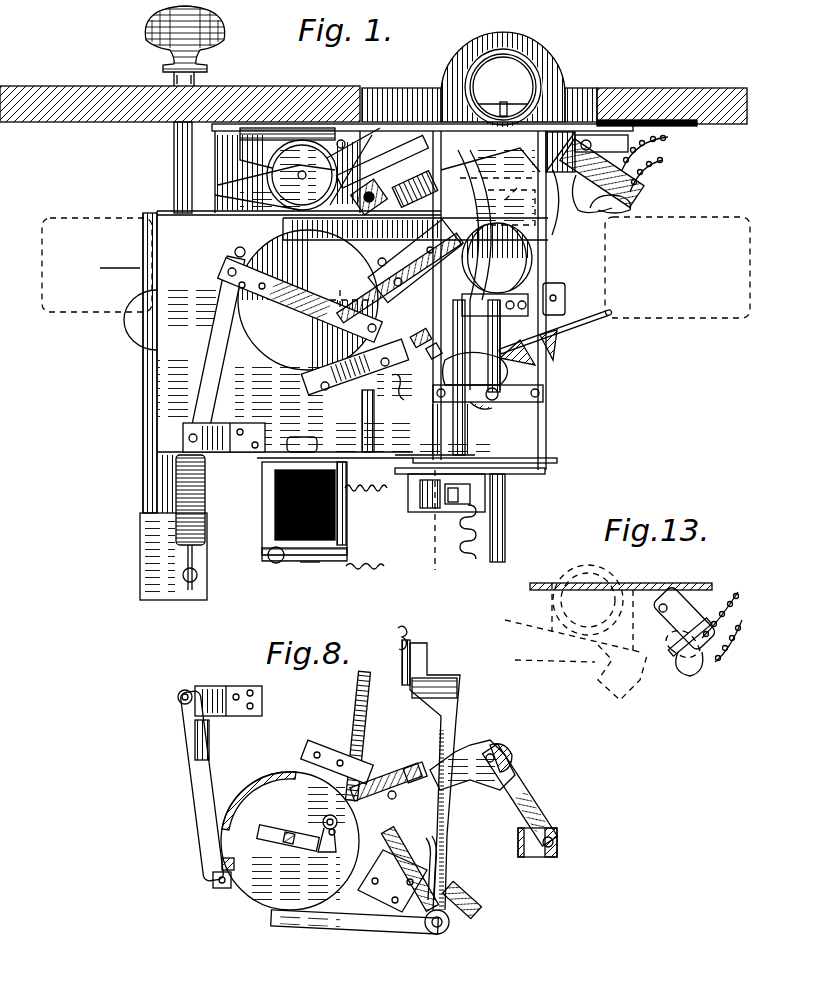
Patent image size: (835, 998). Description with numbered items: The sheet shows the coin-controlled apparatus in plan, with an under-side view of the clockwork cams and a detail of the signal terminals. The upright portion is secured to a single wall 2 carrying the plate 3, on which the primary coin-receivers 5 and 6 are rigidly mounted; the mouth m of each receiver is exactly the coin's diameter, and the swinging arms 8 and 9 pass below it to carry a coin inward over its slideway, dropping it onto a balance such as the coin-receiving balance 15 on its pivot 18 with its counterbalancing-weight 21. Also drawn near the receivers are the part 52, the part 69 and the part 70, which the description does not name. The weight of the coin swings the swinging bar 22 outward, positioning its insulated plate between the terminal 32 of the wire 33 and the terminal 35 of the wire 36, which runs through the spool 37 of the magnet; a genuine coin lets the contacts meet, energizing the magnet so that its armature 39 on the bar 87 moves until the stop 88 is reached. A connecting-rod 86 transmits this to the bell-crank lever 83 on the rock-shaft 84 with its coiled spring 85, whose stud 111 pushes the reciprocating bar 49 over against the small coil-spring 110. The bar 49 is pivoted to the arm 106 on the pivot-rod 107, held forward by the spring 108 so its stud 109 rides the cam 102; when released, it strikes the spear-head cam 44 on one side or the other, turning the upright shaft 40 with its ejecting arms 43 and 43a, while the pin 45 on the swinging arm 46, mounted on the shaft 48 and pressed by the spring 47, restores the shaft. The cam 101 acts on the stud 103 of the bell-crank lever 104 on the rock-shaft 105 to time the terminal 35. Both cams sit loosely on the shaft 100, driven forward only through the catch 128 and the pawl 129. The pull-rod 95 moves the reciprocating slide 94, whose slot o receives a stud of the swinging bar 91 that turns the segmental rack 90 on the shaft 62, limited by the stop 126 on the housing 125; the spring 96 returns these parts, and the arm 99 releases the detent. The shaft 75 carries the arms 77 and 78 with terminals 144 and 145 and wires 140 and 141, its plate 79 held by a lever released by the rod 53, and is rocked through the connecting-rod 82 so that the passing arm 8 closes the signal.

In FIG. 1, the wall 2 is at (72, 92).
In FIG. 1, the plate 3 is at (388, 124).
In FIG. 13, the plate 3 is at (662, 583).
In FIG. 1, the primary coin-receiver 5 is at (519, 27).
In FIG. 1, the primary coin-receiver 6 is at (462, 58).
In FIG. 1, the mouth m is at (532, 62).
In FIG. 1, the slot 52 is at (503, 100).
In FIG. 1, the vertically-disposed shaft 75 is at (586, 145).
In FIG. 13, the vertically-disposed shaft 75 is at (660, 606).
In FIG. 13, the arm 77 is at (700, 628).
In FIG. 1, the plate 79 is at (587, 194).
In FIG. 1, the arm 78 is at (601, 211).
In FIG. 1, the wire 141 is at (663, 147).
In FIG. 13, the wire 141 is at (732, 603).
In FIG. 1, the wire 140 is at (666, 160).
In FIG. 13, the wire 140 is at (733, 644).
In FIG. 13, the terminal 144 is at (697, 676).
In FIG. 13, the terminal 145 is at (668, 655).
In FIG. 13, the swinging arm 8 is at (576, 660).
In FIG. 1, the swinging arm 9 is at (490, 177).
In FIG. 1, the pull-rod 95 is at (174, 144).
In FIG. 1, the plate 69 is at (282, 151).
In FIG. 1, the link 70 is at (250, 182).
In FIG. 1, the rod 53 is at (346, 144).
In FIG. 1, the shaft 62 is at (306, 172).
In FIG. 1, the stop 126 is at (388, 171).
In FIG. 1, the segmentally-formed piece 125 is at (430, 196).
In FIG. 1, the arm 99 is at (478, 222).
In FIG. 8, the arm 99 is at (448, 930).
In FIG. 1, the swinging bar 91 is at (232, 190).
In FIG. 1, the segmental rack 90 is at (240, 215).
In FIG. 1, the stud 103 is at (283, 226).
In FIG. 8, the stud 103 is at (285, 935).
In FIG. 1, the bell-crank lever 104 is at (455, 322).
In FIG. 8, the bell-crank lever 104 is at (440, 680).
In FIG. 1, the cam 101 is at (386, 262).
In FIG. 8, the cam 101 is at (270, 885).
In FIG. 1, the reciprocating slide 94 is at (143, 236).
In FIG. 1, the slot o is at (113, 268).
In FIG. 1, the cam 102 is at (262, 256).
In FIG. 8, the cam 102 is at (262, 775).
In FIG. 1, the reciprocating bar 49 is at (353, 305).
In FIG. 8, the reciprocating bar 49 is at (418, 768).
In FIG. 1, the rock-shaft 105 is at (367, 300).
In FIG. 8, the rock-shaft 105 is at (426, 846).
In FIG. 1, the connecting-rod 82 is at (417, 326).
In FIG. 8, the connecting-rod 82 is at (478, 893).
In FIG. 1, the arm 43a is at (424, 342).
In FIG. 1, the coil-spring 110 is at (250, 300).
In FIG. 1, the arm 106 is at (207, 362).
In FIG. 8, the arm 106 is at (196, 782).
In FIG. 1, the bell-crank lever 83 is at (372, 370).
In FIG. 8, the bell-crank lever 83 is at (372, 785).
In FIG. 1, the rock-shaft 84 is at (400, 385).
In FIG. 8, the coiled spring 85 is at (410, 760).
In FIG. 1, the cam 44 is at (475, 375).
In FIG. 8, the cam 44 is at (470, 780).
In FIG. 1, the coin-receiving balance 15 is at (490, 320).
In FIG. 1, the shaft 48 is at (566, 299).
In FIG. 8, the shaft 48 is at (557, 841).
In FIG. 1, the swinging arm 46 is at (557, 334).
In FIG. 8, the swinging arm 46 is at (520, 782).
In FIG. 8, the spring 47 is at (548, 850).
In FIG. 1, the arm 43 is at (600, 335).
In FIG. 1, the pin 45 is at (495, 402).
In FIG. 8, the pin 45 is at (505, 748).
In FIG. 1, the upright shaft 40 is at (476, 414).
In FIG. 8, the upright shaft 40 is at (486, 750).
In FIG. 1, the pivot-rod 107 is at (190, 436).
In FIG. 8, the pivot-rod 107 is at (190, 694).
In FIG. 8, the spring 108 is at (178, 700).
In FIG. 8, the stud 109 is at (213, 878).
In FIG. 1, the connecting-rod 86 is at (366, 432).
In FIG. 8, the connecting-rod 86 is at (360, 706).
In FIG. 1, the spool 37 is at (275, 504).
In FIG. 1, the stop 88 is at (341, 512).
In FIG. 1, the wire 36 is at (390, 492).
In FIG. 1, the terminal 35 is at (420, 512).
In FIG. 8, the terminal 35 is at (410, 640).
In FIG. 1, the swinging bar 22 is at (430, 512).
In FIG. 1, the terminal 32 is at (452, 504).
In FIG. 1, the pivot 18 is at (510, 474).
In FIG. 1, the counterbalancing-weight 21 is at (505, 512).
In FIG. 1, the wire 33 is at (472, 560).
In FIG. 1, the spring 96 is at (176, 528).
In FIG. 1, the armature 39 is at (300, 561).
In FIG. 1, the bar 87 is at (330, 562).
In FIG. 8, the stud 111 is at (312, 758).
In FIG. 8, the catch 128 is at (300, 848).
In FIG. 8, the pawl 129 is at (337, 837).
In FIG. 8, the shaft 100 is at (292, 845).